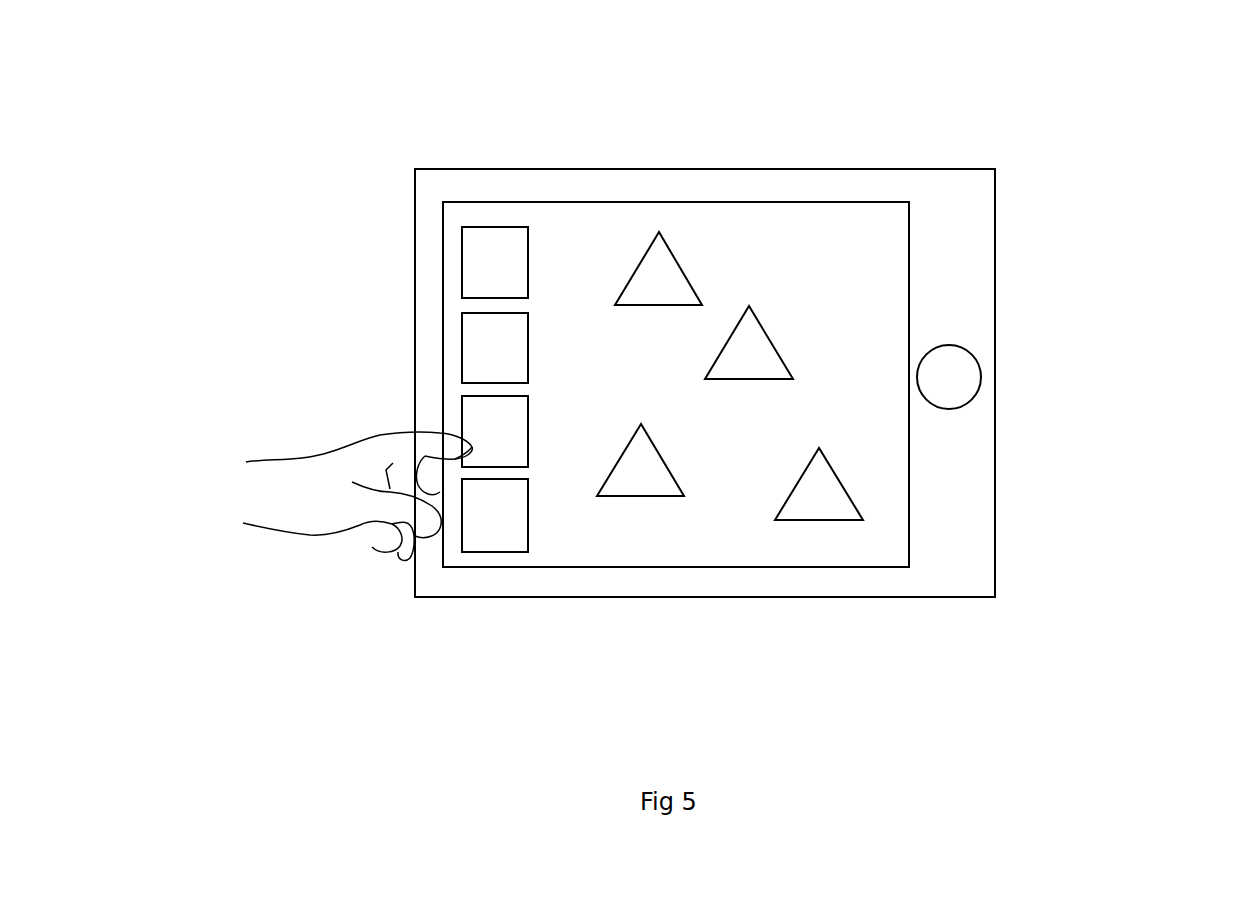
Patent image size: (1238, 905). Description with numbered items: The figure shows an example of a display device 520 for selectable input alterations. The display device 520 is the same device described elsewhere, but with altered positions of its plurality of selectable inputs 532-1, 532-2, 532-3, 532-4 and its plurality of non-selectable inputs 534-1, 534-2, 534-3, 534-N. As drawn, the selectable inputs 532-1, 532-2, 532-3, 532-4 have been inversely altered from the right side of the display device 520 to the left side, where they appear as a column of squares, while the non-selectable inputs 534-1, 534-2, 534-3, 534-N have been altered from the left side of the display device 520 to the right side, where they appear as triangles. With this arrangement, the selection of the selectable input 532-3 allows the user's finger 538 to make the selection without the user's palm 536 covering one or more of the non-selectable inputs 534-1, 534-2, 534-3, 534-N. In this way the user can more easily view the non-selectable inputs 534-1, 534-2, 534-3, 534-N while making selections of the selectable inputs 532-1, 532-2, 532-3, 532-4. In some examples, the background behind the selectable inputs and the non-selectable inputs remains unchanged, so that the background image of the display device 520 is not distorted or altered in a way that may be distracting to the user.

The display device 520 is at (1090, 103).
The selectable input 532-1 is at (462, 262).
The selectable input 532-2 is at (462, 347).
The selectable input 532-3 is at (461, 442).
The fourth touch control element 532-4 is at (510, 542).
The non-selectable input 534-1 is at (668, 250).
The non-selectable input 534-2 is at (775, 345).
The non-selectable input 534-3 is at (843, 483).
The non-selectable input 534-N is at (643, 497).
The user's palm 536 is at (310, 515).
The user's finger 538 is at (462, 460).